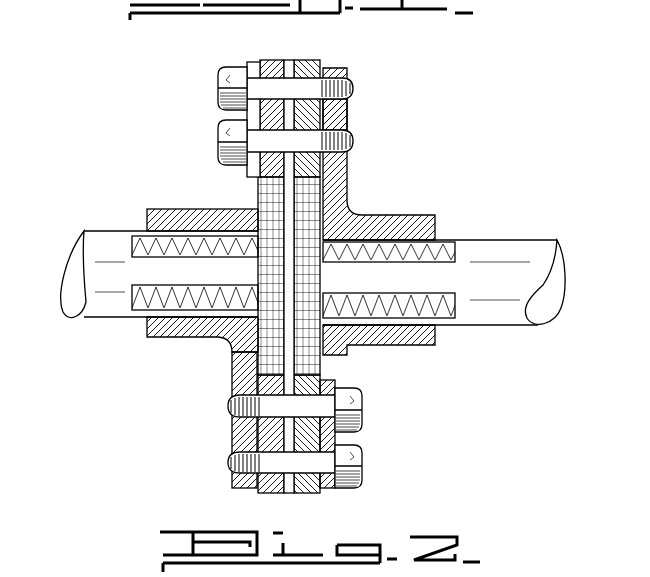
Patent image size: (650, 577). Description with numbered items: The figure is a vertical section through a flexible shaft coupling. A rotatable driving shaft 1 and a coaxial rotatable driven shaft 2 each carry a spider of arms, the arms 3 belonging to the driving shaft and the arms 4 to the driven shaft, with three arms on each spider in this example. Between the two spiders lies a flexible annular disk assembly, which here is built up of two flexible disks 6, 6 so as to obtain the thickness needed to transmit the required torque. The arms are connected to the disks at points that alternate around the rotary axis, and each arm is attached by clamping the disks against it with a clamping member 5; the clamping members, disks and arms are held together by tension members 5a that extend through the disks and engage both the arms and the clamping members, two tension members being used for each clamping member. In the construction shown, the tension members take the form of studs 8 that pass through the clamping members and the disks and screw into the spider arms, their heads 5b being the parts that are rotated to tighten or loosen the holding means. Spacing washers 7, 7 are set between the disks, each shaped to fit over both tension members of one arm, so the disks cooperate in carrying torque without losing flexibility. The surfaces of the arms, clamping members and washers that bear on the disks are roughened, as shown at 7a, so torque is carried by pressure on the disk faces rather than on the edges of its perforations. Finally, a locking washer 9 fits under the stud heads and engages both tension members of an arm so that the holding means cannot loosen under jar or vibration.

The driving shaft 1 is at (509, 248).
The driven shaft 2 is at (108, 243).
The arm 3 is at (338, 71).
The arm 4 is at (235, 363).
The clamping member 5 is at (266, 60).
The tension member 5a is at (268, 96).
The stud head 5b is at (395, 433).
The flexible disk 6 is at (273, 61).
The spacing washer 7 is at (289, 61).
The roughened surface 7a is at (333, 118).
The stud 8 is at (355, 89).
The locking washer 9 is at (255, 68).